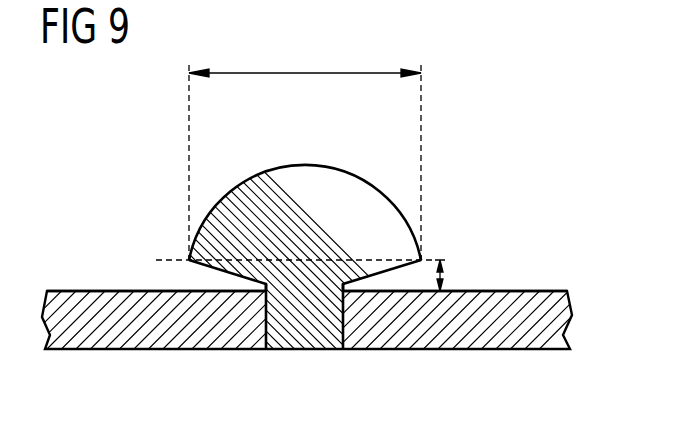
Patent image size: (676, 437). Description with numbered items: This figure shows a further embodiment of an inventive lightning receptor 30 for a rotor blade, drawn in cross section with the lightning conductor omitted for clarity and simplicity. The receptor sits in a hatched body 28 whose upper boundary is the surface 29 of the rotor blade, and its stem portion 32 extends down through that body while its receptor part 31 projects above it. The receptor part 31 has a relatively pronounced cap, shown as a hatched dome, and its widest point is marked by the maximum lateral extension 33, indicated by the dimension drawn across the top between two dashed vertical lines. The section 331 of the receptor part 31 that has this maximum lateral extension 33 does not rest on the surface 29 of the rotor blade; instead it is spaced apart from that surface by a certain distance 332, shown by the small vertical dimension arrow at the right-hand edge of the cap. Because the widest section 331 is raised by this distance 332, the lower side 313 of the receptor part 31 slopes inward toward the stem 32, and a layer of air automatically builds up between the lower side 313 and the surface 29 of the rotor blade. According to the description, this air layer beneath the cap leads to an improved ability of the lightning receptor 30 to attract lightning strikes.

The substrate 28 is at (80, 302).
The surface of the rotor blade 29 is at (128, 291).
The lightning receptor 30 is at (241, 250).
The receptor part 31 is at (347, 178).
The stem / via portion 32 is at (308, 337).
The lower side of the receptor part 313 is at (220, 275).
The maximum lateral extension 33 is at (332, 73).
The section with the maximum lateral extension 331 is at (188, 258).
The distance 332 is at (445, 272).